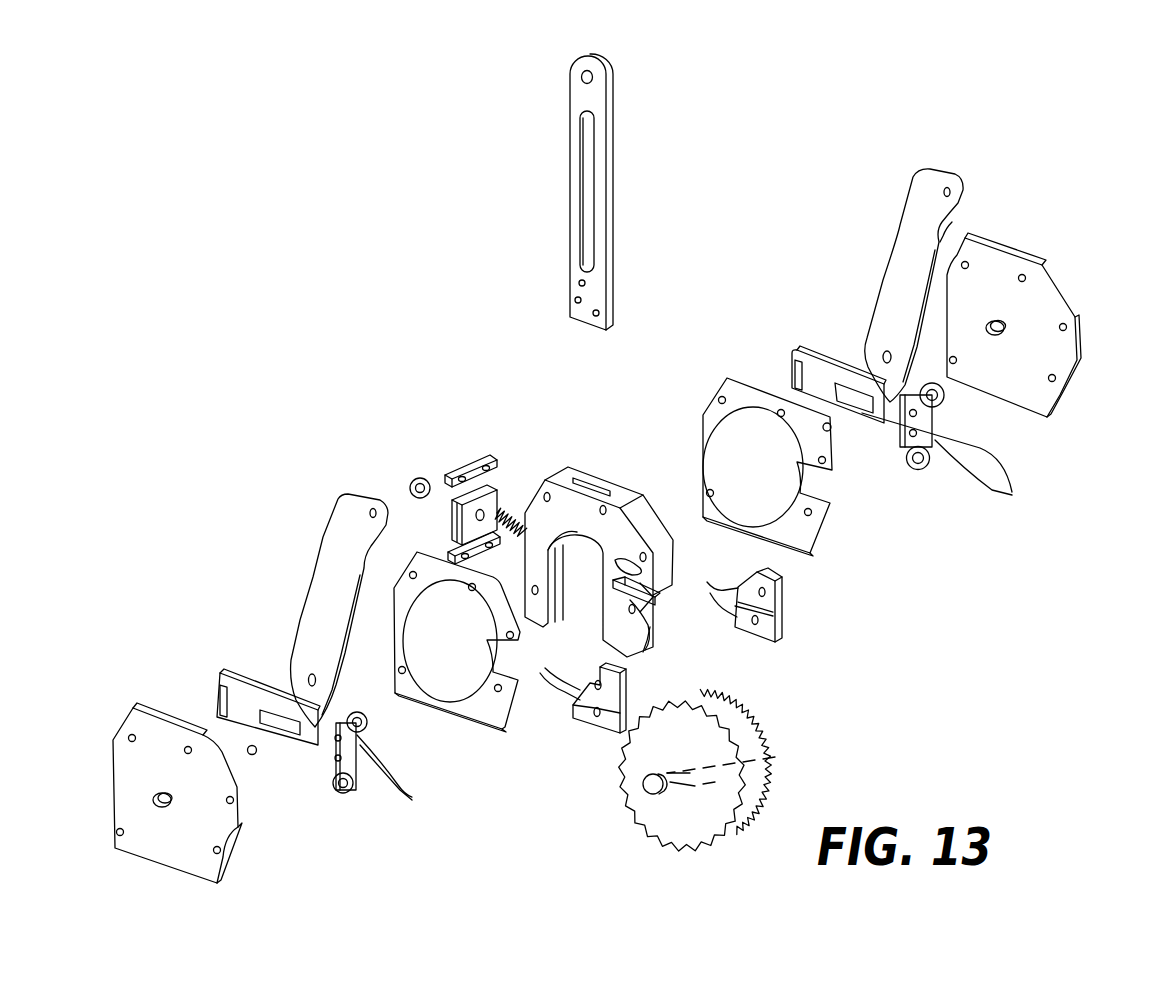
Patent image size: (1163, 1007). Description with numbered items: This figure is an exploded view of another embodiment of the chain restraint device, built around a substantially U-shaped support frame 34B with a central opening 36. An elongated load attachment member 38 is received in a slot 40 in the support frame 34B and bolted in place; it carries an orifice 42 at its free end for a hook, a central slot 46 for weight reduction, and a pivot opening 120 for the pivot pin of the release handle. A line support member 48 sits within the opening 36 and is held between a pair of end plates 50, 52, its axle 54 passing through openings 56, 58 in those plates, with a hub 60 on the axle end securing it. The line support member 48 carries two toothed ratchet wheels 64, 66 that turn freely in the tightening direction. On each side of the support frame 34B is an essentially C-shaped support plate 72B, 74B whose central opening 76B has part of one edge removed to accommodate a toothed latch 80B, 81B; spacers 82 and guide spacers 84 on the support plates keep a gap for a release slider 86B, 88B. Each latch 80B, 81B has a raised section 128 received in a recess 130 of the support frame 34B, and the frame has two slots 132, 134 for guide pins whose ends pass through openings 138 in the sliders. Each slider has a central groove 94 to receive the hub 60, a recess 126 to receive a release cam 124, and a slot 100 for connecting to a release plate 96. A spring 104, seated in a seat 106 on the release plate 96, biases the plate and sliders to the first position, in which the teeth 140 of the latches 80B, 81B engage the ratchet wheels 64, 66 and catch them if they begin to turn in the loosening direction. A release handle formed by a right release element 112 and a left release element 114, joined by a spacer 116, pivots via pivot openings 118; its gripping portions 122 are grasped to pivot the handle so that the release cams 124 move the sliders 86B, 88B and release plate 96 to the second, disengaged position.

The support frame 34B is at (622, 548).
The central opening 36 is at (600, 607).
The load attachment member 38 is at (593, 192).
The slot 40 is at (588, 485).
The orifice 42 is at (582, 77).
The central slot 46 is at (597, 194).
The line support member 48 is at (635, 812).
The end plate 50 is at (158, 791).
The end plate 52 is at (1046, 325).
The axle 54 is at (703, 792).
The opening 56 is at (153, 796).
The opening 58 is at (1005, 334).
The hub 60 is at (653, 797).
The ratchet wheel 64 is at (717, 813).
The ratchet wheel 66 is at (760, 790).
The support plate 72B is at (490, 727).
The support plate 74B is at (576, 605).
The central opening 76B is at (713, 470).
The toothed latch 80B is at (627, 657).
The toothed latch 81B is at (783, 612).
The spacer 82 is at (830, 432).
The guide spacer 84 is at (944, 398).
The release slider 86B is at (245, 718).
The release slider 88B is at (518, 492).
The central groove 94 is at (847, 362).
The release plate 96 is at (432, 472).
The slot 100 is at (793, 370).
The spring 104 is at (540, 512).
The seat 106 is at (475, 516).
The right release element 112 is at (312, 607).
The left release element 114 is at (651, 424).
The spacer 116 is at (420, 478).
The pivot opening 118 is at (882, 355).
The pivot opening 120 is at (600, 313).
The gripping portion 122 is at (940, 228).
The release cam 124 is at (893, 403).
The recess 126 is at (903, 414).
The raised section 128 is at (473, 455).
The recess 130 is at (667, 593).
The slot 132 is at (650, 627).
The slot 134 is at (628, 562).
The opening 138 is at (708, 613).
The teeth 140 is at (627, 627).